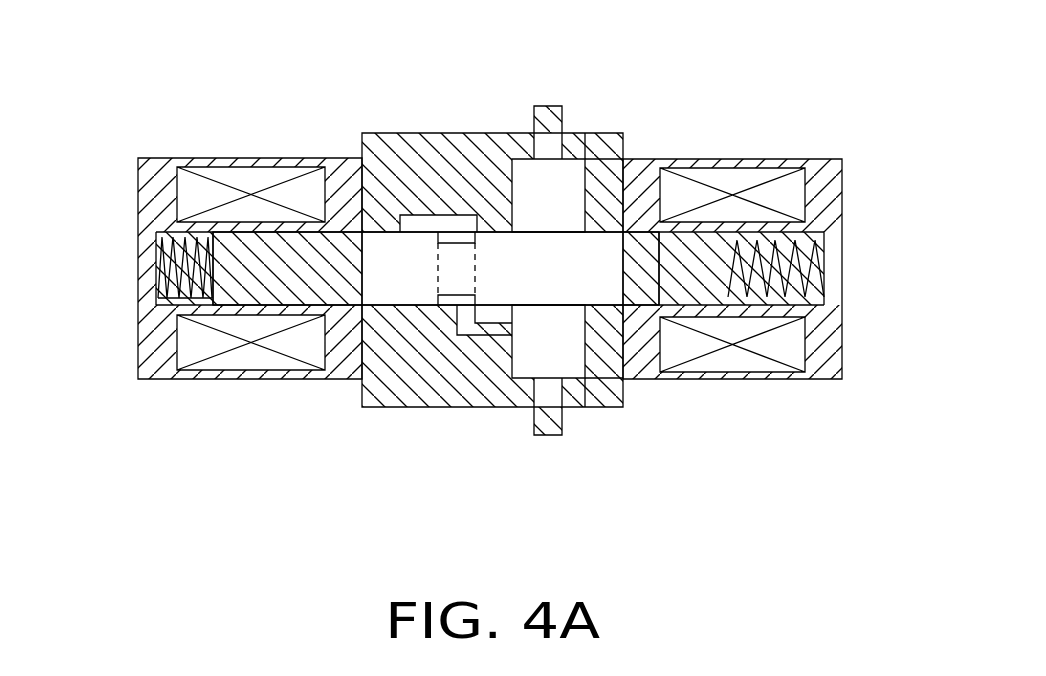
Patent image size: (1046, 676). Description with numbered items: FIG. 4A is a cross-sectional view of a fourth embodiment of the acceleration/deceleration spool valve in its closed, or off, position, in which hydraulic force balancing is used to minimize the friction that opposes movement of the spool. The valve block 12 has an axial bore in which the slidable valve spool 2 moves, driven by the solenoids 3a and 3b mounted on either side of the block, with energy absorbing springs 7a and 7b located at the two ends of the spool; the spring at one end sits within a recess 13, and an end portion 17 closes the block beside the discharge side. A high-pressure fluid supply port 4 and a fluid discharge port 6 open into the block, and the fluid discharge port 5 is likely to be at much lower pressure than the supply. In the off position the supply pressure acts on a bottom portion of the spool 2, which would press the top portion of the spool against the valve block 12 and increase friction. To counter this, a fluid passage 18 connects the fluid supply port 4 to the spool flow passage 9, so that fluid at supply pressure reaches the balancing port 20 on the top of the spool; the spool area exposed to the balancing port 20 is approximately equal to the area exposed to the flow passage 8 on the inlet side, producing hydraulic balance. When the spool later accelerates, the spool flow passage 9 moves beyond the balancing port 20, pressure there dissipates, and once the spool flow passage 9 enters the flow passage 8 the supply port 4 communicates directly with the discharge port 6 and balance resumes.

The valve spool 2 is at (558, 284).
The solenoid 3a is at (237, 175).
The solenoid 3b is at (783, 193).
The fluid supply port 4 is at (543, 422).
The fluid discharge port 5 is at (573, 223).
The fluid discharge port 6 is at (545, 113).
The energy absorbing spring 7a is at (162, 264).
The energy absorbing spring 7b is at (800, 267).
The flow passage 8 is at (558, 209).
The spool flow passage 9 is at (447, 303).
The valve block 12 is at (396, 132).
The spring recess 13 is at (703, 258).
The end housing 17 is at (613, 407).
The fluid passage 18 is at (470, 333).
The balancing port 20 is at (422, 223).